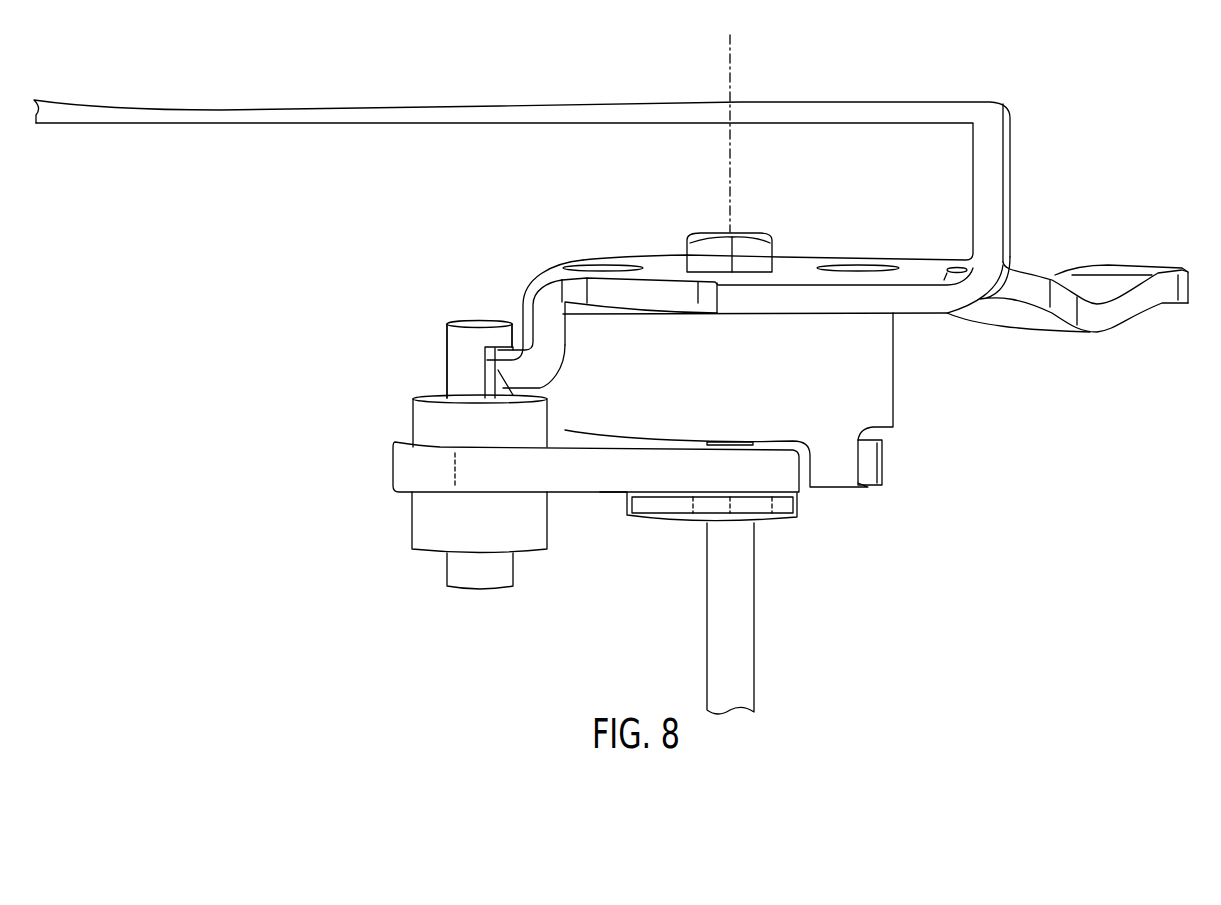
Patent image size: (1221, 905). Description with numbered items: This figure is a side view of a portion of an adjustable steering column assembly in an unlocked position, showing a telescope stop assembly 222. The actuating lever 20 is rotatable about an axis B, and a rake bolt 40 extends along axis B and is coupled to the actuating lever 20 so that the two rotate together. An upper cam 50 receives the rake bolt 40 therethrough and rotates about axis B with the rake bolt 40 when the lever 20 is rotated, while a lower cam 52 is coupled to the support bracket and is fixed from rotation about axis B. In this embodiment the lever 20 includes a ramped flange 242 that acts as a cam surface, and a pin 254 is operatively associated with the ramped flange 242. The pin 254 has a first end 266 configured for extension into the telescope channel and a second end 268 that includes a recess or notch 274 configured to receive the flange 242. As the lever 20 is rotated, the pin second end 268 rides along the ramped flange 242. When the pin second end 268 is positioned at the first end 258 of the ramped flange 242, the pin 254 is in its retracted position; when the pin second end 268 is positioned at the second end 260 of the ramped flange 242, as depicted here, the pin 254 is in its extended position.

The actuating lever 20 is at (832, 95).
The rake bolt 40 is at (762, 250).
The upper cam 50 is at (896, 378).
The lower cam 52 is at (777, 528).
The telescope stop assembly 222 is at (217, 388).
The ramped flange 242 is at (487, 370).
The pin 254 is at (447, 363).
The first end of ramped flange 258 is at (517, 312).
The second end of ramped flange 260 is at (508, 372).
The first end of pin 266 is at (490, 590).
The second end of pin 268 is at (442, 333).
The recess or notch 274 is at (497, 343).
The axis B is at (733, 58).